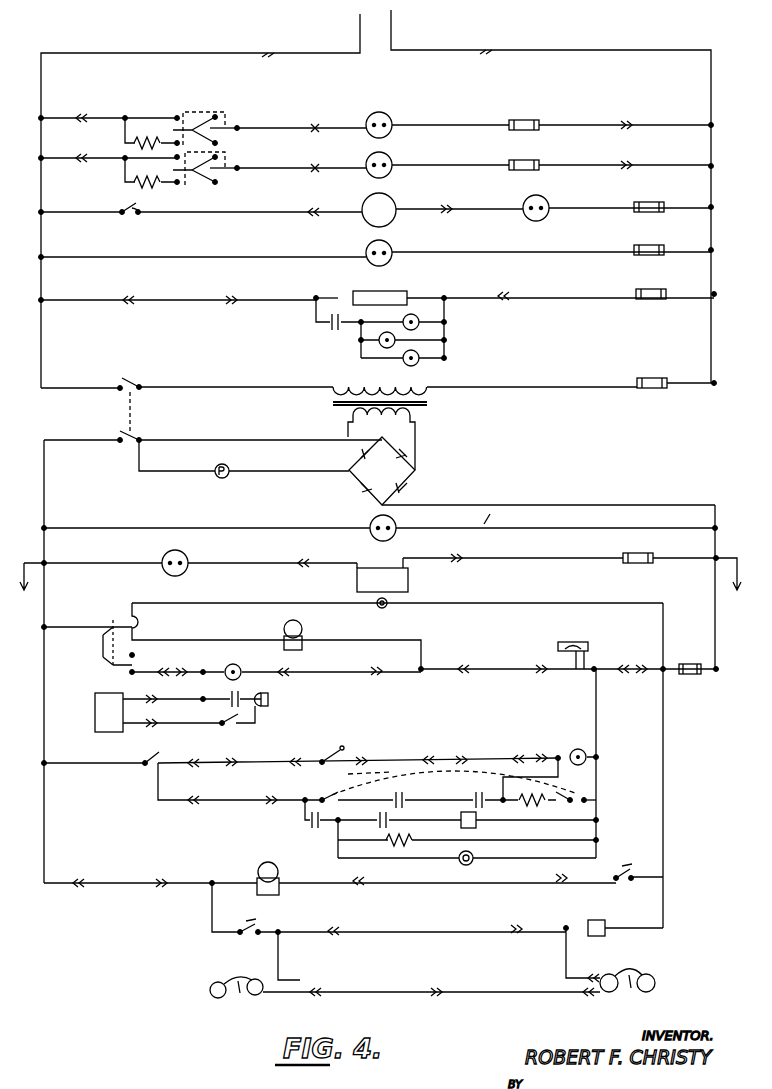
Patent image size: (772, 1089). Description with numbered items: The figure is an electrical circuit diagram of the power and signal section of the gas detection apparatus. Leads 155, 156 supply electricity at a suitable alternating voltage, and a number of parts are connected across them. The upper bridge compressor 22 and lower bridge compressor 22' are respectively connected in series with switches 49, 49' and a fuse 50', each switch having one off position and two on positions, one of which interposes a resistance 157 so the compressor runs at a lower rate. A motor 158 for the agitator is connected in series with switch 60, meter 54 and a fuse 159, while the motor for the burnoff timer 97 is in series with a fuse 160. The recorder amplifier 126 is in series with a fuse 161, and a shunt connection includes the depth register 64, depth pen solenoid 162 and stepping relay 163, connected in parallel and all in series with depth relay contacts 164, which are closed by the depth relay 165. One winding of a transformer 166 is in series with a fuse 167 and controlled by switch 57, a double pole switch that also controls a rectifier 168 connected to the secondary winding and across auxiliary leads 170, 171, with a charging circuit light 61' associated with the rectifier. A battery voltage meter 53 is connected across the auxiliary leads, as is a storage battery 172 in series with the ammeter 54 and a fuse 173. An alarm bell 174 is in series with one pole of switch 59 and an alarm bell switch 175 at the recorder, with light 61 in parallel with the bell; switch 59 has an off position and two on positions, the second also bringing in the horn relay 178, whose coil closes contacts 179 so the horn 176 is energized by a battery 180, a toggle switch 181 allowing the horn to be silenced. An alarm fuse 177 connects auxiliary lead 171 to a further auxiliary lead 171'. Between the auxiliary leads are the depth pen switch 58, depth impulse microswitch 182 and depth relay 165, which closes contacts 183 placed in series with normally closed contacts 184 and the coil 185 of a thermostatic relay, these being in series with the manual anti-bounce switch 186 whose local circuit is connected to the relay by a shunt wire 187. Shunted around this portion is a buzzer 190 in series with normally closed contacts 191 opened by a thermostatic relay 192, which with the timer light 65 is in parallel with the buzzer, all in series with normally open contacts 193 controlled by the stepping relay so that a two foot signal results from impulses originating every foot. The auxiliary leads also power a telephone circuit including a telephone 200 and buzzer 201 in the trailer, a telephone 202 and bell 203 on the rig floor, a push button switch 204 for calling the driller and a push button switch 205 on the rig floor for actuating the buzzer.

The lead 155 is at (358, 18).
The lead 156 is at (393, 14).
The switch 49 is at (206, 117).
The switch 49' is at (218, 166).
The resistance 157 is at (158, 128).
The upper bridge compressor 22 is at (377, 115).
The lower bridge compressor 22' is at (391, 158).
The fuse 50' is at (539, 134).
The motor for agitator 158 is at (366, 198).
The meter 54 is at (529, 198).
The fuse 159 is at (655, 199).
The switch 60 is at (122, 214).
The burnoff timer 97 is at (366, 243).
The fuse 160 is at (648, 244).
The recorder amplifier 126 is at (358, 286).
The fuse 161 is at (640, 286).
The depth pen solenoid 162 is at (405, 306).
The depth register 64 is at (394, 336).
The depth relay contacts 164 is at (350, 332).
The stepping relay 163 is at (406, 362).
The switch 57 is at (128, 414).
The transformer 166 is at (333, 407).
The fuse 167 is at (664, 388).
The charging circuit light 61' is at (207, 480).
The rectifier 168 is at (392, 480).
The auxiliary lead 170 is at (44, 504).
The auxiliary lead 171 is at (734, 576).
The battery voltage meter 53 is at (370, 522).
The storage battery 172 is at (382, 575).
The fuse 173 is at (643, 565).
The light 61 is at (379, 612).
The alarm bell 174 is at (283, 627).
The alarm bell switch 175 is at (566, 640).
The switch 59 is at (90, 631).
The horn relay 178 is at (235, 663).
The contacts 179 is at (227, 695).
The horn 176 is at (272, 700).
The battery 180 is at (95, 711).
The toggle switch 181 is at (234, 731).
The alarm fuse 177 is at (683, 676).
The depth pen switch 58 is at (155, 756).
The depth impulse microswitch 182 is at (331, 750).
The depth relay 165 is at (568, 746).
The switch 186 is at (446, 785).
The normally closed contacts 184 is at (396, 798).
The contacts 183 is at (481, 792).
The shunt wire 187 is at (549, 780).
The coil of thermostatic relay 185 is at (530, 806).
The further auxiliary lead 171' is at (685, 765).
The normally open contacts 193 is at (311, 824).
The normally closed contacts 191 is at (390, 818).
The thermostatic relay 192 is at (421, 834).
The buzzer 190 is at (478, 823).
The timer light 65 is at (460, 857).
The push button switch 204 is at (630, 853).
The bell 203 is at (270, 866).
The push button switch 205 is at (254, 924).
The buzzer 201 is at (591, 918).
The telephone 202 is at (236, 992).
The telephone 200 is at (629, 990).